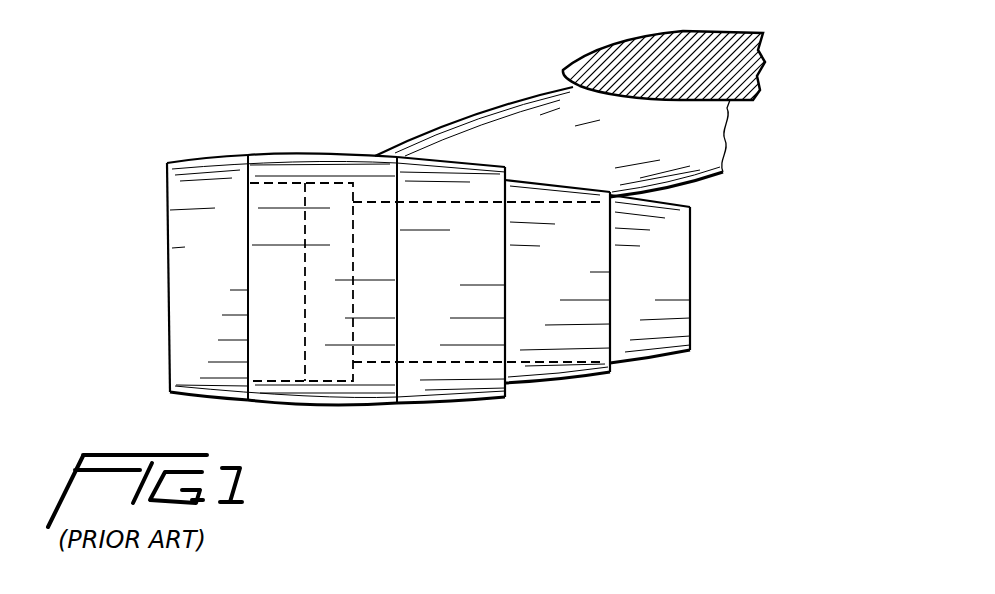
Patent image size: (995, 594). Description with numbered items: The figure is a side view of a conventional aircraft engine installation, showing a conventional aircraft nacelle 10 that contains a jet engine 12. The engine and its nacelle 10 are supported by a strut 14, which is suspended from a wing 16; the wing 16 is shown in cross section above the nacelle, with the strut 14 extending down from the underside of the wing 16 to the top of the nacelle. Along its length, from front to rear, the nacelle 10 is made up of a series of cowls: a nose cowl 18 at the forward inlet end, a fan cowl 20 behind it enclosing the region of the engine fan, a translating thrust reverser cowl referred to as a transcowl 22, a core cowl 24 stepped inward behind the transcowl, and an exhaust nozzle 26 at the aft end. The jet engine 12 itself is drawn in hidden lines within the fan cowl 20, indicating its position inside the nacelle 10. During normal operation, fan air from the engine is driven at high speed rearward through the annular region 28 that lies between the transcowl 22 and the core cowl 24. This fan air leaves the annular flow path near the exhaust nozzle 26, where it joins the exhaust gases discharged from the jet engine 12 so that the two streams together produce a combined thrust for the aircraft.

The aircraft nacelle 10 is at (242, 148).
The jet engine 12 is at (307, 180).
The strut 14 is at (528, 117).
The wing 16 is at (717, 37).
The nose cowl 18 is at (192, 177).
The fan cowl 20 is at (337, 153).
The transcowl 22 is at (425, 185).
The core cowl 24 is at (550, 197).
The exhaust nozzle 26 is at (668, 271).
The annular region 28 is at (510, 385).